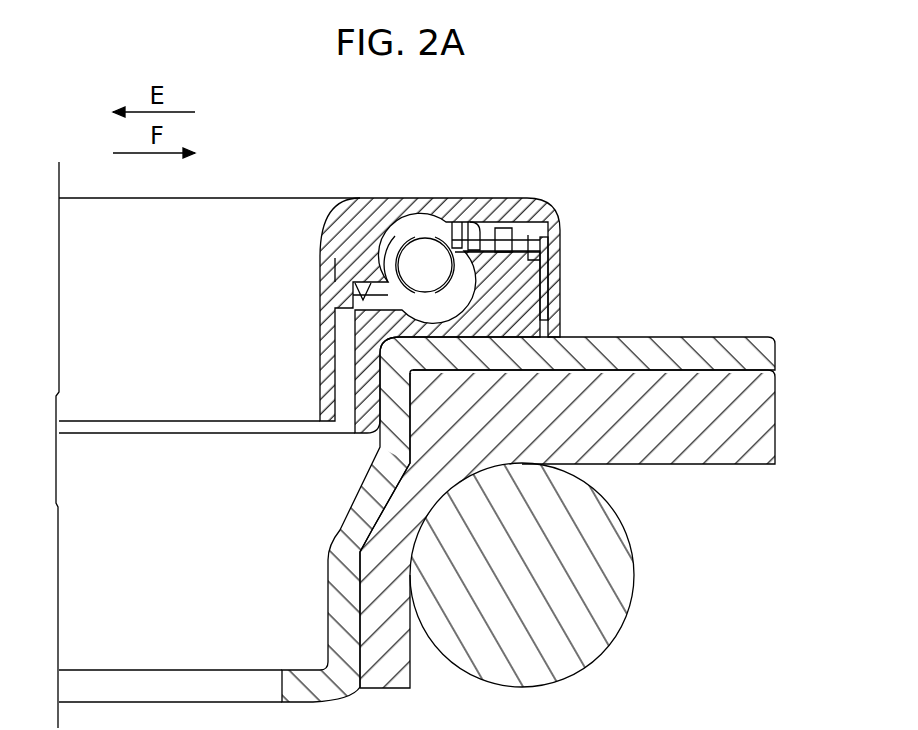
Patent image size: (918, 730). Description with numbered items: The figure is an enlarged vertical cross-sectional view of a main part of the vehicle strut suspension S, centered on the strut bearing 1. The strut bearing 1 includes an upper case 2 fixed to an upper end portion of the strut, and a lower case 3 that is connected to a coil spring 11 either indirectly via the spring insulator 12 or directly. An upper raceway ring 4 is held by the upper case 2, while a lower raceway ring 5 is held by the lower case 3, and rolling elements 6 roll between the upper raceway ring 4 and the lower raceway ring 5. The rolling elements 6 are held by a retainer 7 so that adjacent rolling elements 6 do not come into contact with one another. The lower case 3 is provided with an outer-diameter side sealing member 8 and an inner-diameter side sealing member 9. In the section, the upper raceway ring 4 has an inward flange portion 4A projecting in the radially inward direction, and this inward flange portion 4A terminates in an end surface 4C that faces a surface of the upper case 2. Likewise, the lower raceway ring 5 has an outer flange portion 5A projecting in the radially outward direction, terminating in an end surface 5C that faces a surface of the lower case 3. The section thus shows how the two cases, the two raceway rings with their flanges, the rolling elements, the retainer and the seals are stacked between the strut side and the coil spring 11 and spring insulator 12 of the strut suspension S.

The strut bearing 1 is at (442, 258).
The upper case 2 is at (421, 186).
The lower case 3 is at (548, 318).
The upper raceway ring 4 is at (405, 240).
The inward flange portion 4A is at (376, 250).
The end surface 4C is at (343, 266).
The lower raceway ring 5 is at (548, 292).
The outer flange portion 5A is at (548, 262).
The end surface 5C is at (504, 228).
The rolling elements 6 is at (472, 222).
The retainer 7 is at (455, 222).
The outer-diameter side sealing member 8 is at (545, 240).
The inner-diameter side sealing member 9 is at (355, 300).
The coil spring 11 is at (598, 604).
The spring insulator 12 is at (750, 467).
The strut suspension S is at (710, 332).